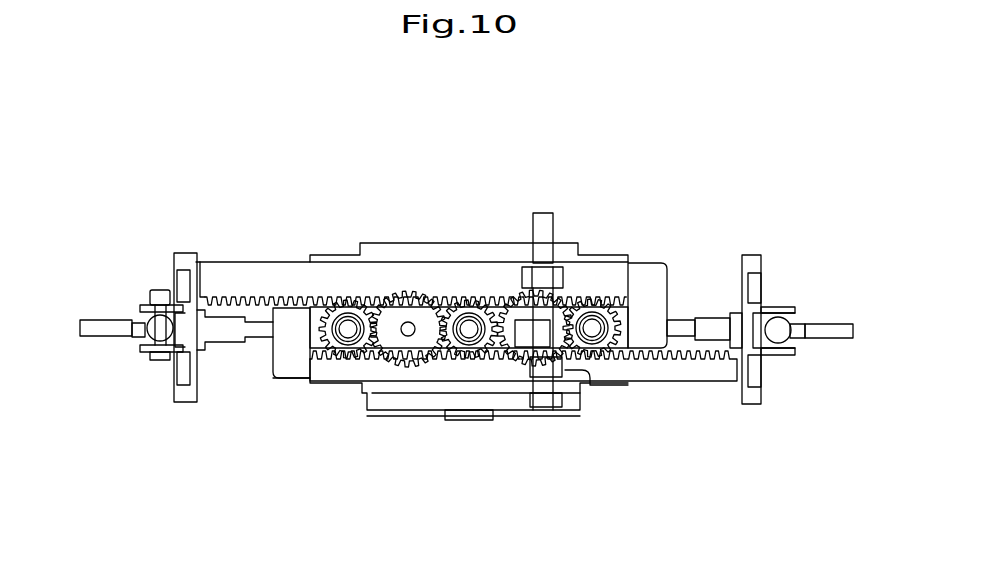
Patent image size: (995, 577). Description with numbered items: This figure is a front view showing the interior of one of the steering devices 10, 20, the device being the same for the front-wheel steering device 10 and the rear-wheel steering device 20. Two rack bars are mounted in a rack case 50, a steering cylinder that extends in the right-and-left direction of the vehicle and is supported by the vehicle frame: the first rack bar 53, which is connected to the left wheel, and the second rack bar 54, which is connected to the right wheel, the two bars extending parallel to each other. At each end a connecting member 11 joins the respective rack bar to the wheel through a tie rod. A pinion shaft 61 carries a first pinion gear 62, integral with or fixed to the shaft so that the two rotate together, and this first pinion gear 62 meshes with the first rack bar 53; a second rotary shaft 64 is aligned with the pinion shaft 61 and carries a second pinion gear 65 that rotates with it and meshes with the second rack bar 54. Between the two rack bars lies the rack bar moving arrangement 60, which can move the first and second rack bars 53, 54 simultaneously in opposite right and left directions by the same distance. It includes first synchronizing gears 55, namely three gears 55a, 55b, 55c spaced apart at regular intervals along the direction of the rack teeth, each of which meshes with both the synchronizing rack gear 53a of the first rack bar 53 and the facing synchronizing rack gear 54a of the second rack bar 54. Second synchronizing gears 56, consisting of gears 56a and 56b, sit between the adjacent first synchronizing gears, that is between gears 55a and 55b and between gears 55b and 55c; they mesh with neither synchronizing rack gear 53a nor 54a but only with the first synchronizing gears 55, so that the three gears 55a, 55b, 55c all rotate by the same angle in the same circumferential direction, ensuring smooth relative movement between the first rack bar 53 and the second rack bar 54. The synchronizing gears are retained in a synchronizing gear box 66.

The steering device 10 is at (462, 337).
The steering device 20 is at (705, 213).
The connecting member 11 is at (118, 327).
The rack case 50 is at (362, 404).
The first rack bar 53 is at (240, 280).
The synchronizing rack gear 53a is at (240, 312).
The second rack bar 54 is at (718, 368).
The synchronizing rack gear 54a is at (673, 348).
The first synchronizing gears 55 is at (622, 192).
The first synchronizing gear 55a is at (348, 329).
The first synchronizing gear 55b is at (469, 329).
The first synchronizing gear 55c is at (592, 328).
The second synchronizing gears 56 is at (516, 505).
The second synchronizing gear 56a is at (418, 350).
The second synchronizing gear 56b is at (525, 360).
The rack bar moving arrangement 60 is at (572, 376).
The pinion shaft 61 is at (540, 233).
The first pinion gear 62 is at (532, 249).
The second rotary shaft 64 is at (593, 360).
The second pinion gear 65 is at (558, 393).
The synchronizing gear box 66 is at (313, 320).